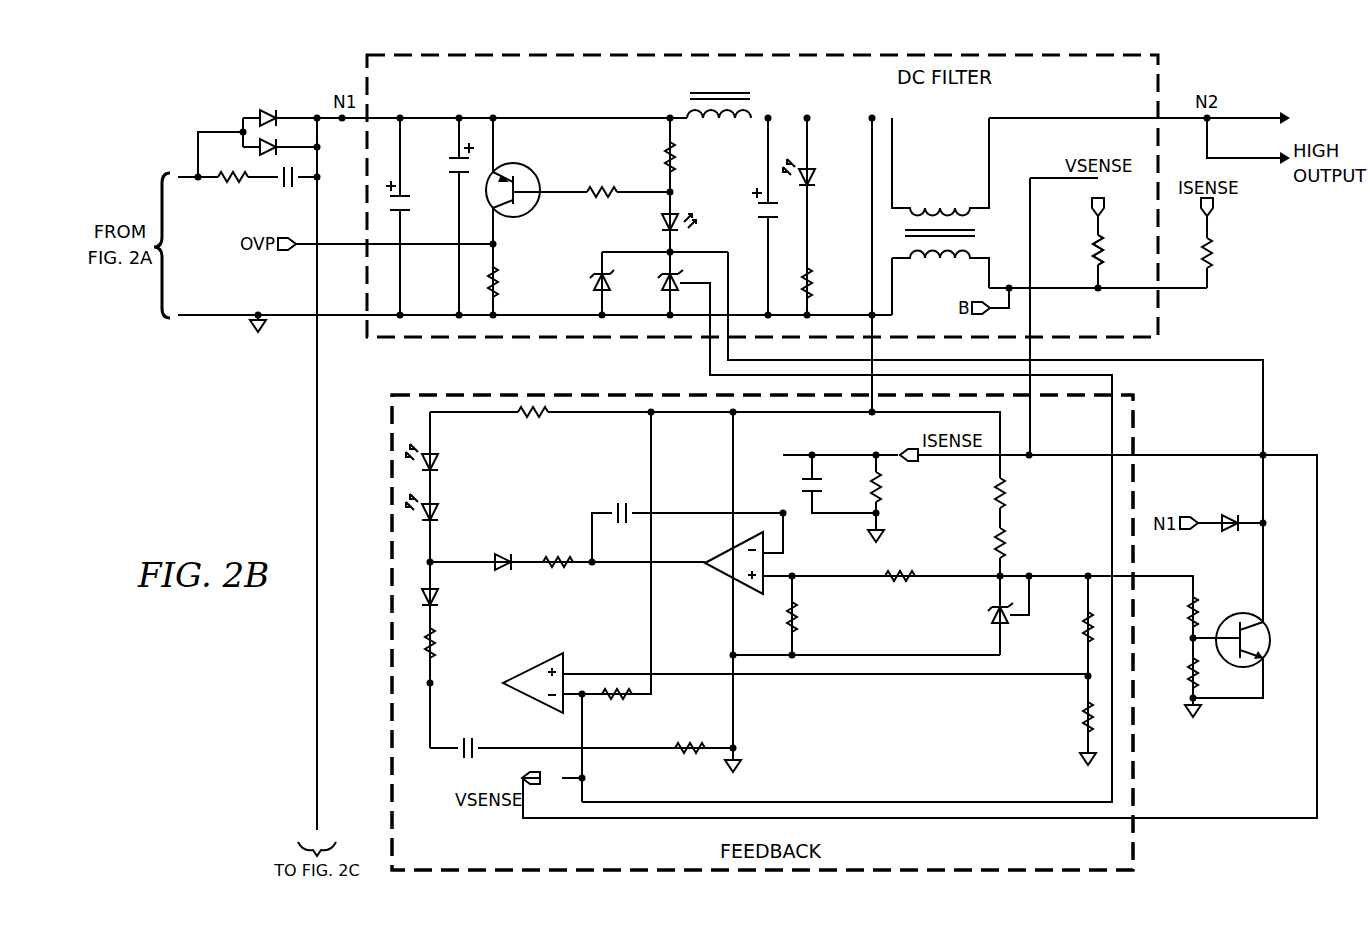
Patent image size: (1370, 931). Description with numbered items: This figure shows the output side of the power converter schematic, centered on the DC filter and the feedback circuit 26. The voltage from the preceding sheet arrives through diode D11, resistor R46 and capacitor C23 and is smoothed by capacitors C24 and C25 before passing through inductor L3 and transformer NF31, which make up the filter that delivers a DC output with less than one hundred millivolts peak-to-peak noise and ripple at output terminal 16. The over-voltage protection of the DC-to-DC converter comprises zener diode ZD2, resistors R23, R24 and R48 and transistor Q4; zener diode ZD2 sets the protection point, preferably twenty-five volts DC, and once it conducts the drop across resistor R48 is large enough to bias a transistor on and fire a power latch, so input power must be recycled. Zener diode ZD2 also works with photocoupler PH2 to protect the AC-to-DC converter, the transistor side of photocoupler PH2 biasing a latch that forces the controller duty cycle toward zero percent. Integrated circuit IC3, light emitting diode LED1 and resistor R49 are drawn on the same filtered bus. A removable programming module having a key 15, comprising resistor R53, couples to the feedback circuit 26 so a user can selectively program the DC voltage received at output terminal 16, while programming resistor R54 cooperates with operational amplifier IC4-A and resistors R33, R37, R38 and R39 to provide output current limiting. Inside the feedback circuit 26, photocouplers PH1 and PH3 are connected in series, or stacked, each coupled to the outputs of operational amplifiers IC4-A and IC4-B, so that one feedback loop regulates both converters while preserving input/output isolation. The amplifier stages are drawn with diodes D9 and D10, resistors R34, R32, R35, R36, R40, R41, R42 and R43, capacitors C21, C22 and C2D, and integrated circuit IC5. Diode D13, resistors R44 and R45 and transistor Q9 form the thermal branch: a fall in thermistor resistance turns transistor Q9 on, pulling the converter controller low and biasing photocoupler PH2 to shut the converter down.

The diode pair D11 is at (265, 118).
The resistor R46 is at (230, 192).
The capacitor C23 is at (284, 190).
The capacitor C24 is at (412, 200).
The capacitor C25 is at (594, 182).
The transistor Q4 is at (536, 178).
The resistor R23 is at (509, 282).
The resistor R24 is at (626, 182).
The resistor R48 is at (686, 157).
The photocoupler PH2 is at (656, 225).
The zener diode ZD2 is at (583, 283).
The shunt regulator IC3 is at (654, 283).
The inductor L3 is at (719, 93).
The light emitting diode LED1 is at (823, 173).
The resistor R49 is at (824, 283).
The noise filter transformer NF31 is at (940, 216).
The resistor R53 is at (1112, 243).
The key 15 is at (1090, 250).
The programming resistor R54 is at (1222, 243).
The output terminal 16 is at (1257, 166).
The resistor R33 is at (532, 427).
The photocoupler PH3 is at (439, 461).
The photocoupler PH1 is at (439, 511).
The diode D9 is at (442, 600).
The diode D10 is at (502, 579).
The resistor R34 is at (556, 551).
The capacitor C21 is at (618, 503).
The operational amplifier IC4-A is at (717, 565).
The capacitor C22 is at (827, 490).
The resistor R38 is at (892, 484).
The resistor R40 is at (1015, 491).
The resistor R41 is at (1015, 552).
The resistor R37 is at (807, 617).
The resistor R39 is at (899, 590).
The shunt regulator IC5 is at (983, 616).
The resistor R42 is at (1070, 627).
The resistor R43 is at (1069, 717).
The operational amplifier IC4-B is at (533, 672).
The resistor R32 is at (446, 644).
The capacitor C2D is at (463, 738).
The resistor R35 is at (616, 709).
The resistor R36 is at (688, 736).
The diode D13 is at (1227, 506).
The resistor R44 is at (1174, 612).
The resistor R45 is at (1174, 673).
The transistor Q9 is at (1246, 655).
The feedback circuit 26 is at (1133, 848).